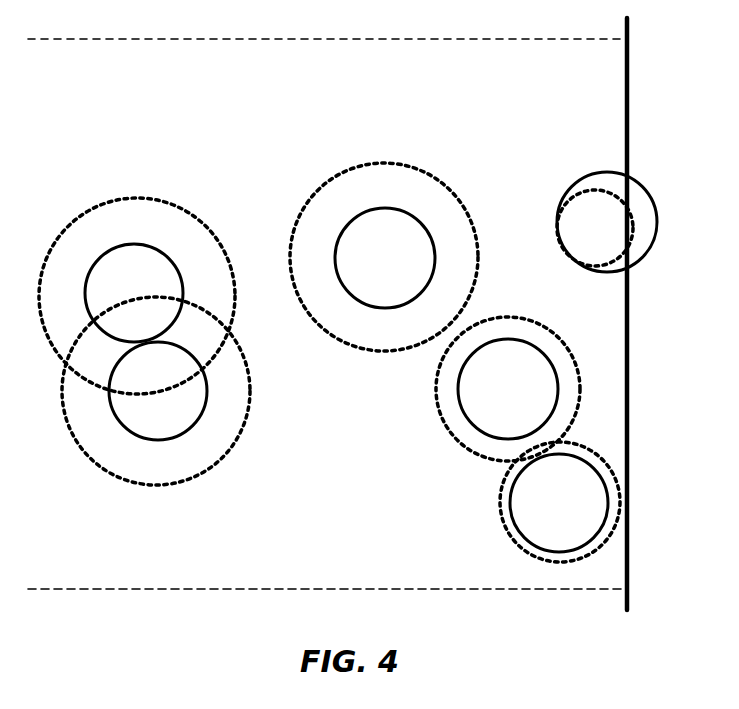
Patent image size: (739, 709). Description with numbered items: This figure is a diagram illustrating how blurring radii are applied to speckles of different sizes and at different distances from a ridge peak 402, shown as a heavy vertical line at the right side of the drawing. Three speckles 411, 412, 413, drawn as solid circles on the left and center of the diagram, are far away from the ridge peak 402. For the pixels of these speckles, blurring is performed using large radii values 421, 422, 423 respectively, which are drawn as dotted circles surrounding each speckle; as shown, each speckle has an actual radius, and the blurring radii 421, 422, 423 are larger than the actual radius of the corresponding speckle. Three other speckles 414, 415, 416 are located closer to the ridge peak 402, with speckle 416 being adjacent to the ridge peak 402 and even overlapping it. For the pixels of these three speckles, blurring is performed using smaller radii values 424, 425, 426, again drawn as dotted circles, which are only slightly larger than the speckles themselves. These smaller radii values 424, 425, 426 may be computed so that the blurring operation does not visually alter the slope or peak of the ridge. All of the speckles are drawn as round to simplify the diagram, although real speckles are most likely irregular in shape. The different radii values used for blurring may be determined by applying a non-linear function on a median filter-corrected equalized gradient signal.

The ridge peak 402 is at (629, 57).
The speckle 411 is at (142, 245).
The speckle 412 is at (110, 417).
The speckle 413 is at (428, 233).
The speckle 414 is at (535, 343).
The speckle 415 is at (510, 492).
The speckle 416 is at (656, 210).
The large radius value 421 is at (77, 215).
The large radius value 422 is at (152, 486).
The large radius value 423 is at (381, 163).
The smaller radius value 424 is at (436, 395).
The smaller radius value 425 is at (504, 528).
The smaller radius value 426 is at (600, 174).